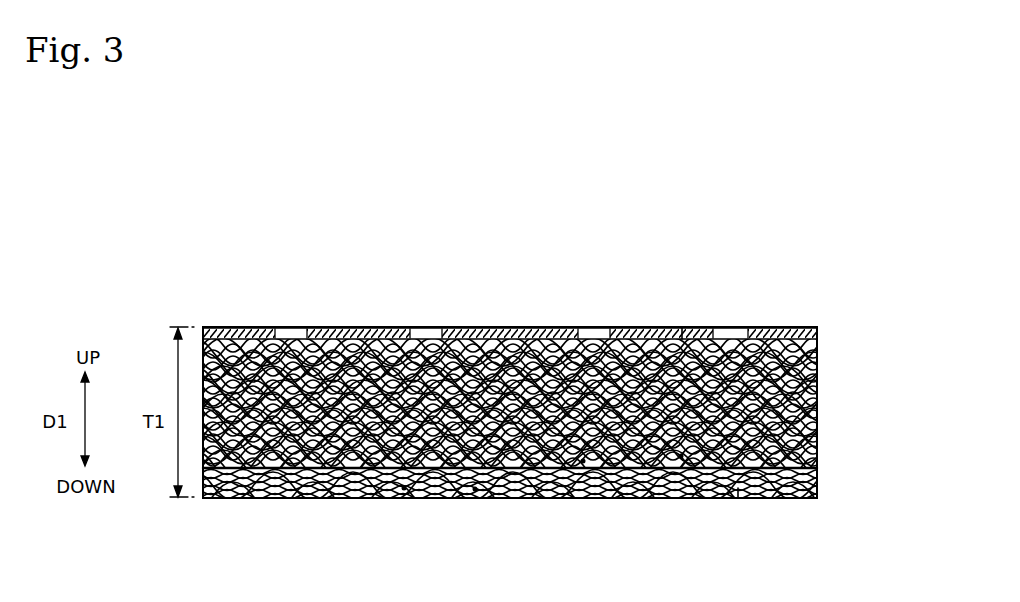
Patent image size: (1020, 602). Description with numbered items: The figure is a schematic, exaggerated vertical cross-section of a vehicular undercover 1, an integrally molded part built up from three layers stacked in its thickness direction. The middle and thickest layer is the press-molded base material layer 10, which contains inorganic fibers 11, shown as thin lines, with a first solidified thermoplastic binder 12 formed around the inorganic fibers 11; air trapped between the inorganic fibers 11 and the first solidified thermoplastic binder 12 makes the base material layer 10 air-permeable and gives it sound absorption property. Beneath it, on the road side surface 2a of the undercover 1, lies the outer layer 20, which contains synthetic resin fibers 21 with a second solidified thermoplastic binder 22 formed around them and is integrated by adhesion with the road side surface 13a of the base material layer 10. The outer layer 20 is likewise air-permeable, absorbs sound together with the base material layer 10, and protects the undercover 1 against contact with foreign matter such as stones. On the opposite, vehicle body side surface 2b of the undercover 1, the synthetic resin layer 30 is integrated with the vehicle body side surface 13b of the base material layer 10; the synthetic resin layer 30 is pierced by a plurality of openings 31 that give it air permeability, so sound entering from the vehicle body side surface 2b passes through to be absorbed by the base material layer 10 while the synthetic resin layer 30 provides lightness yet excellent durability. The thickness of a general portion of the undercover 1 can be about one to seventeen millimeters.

The vehicular undercover 1 is at (205, 245).
The base material layer 10 is at (818, 393).
The inorganic fibers 11 is at (583, 462).
The first solidified thermoplastic binder 12 is at (681, 457).
The road side surface of the base material layer 13a is at (739, 496).
The vehicle body side surface of the base material layer 13b is at (682, 328).
The outer layer 20 is at (818, 483).
The synthetic resin fibers 21 is at (404, 489).
The second solidified thermoplastic binder 22 is at (475, 490).
The road side surface of the undercover 2a is at (803, 499).
The vehicle body side surface of the undercover 2b is at (802, 328).
The synthetic resin layer 30 is at (818, 332).
The openings 31 is at (292, 326).